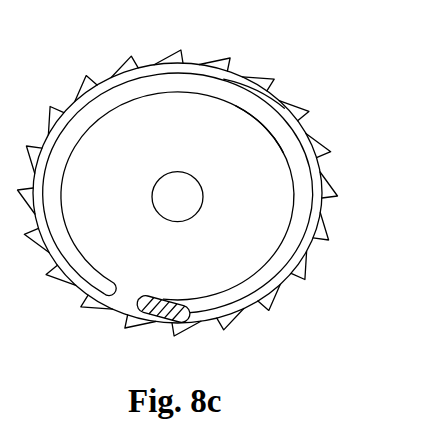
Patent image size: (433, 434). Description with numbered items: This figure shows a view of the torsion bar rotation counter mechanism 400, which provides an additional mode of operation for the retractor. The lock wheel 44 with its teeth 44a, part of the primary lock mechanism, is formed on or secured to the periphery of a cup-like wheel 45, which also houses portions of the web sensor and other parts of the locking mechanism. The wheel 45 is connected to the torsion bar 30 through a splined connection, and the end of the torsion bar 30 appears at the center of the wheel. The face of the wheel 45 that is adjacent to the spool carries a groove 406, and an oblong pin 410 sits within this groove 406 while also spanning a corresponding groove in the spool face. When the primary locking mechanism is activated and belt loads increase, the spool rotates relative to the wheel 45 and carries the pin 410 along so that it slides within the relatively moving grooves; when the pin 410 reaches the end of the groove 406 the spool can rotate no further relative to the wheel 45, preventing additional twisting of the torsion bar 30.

The torsion bar 30 is at (203, 198).
The lock wheel 44 is at (320, 210).
The teeth 44a is at (328, 187).
The cup-like wheel 45 is at (270, 157).
The torsion bar rotation counter mechanism 400 is at (268, 273).
The groove 406 is at (257, 112).
The pin 410 is at (157, 300).